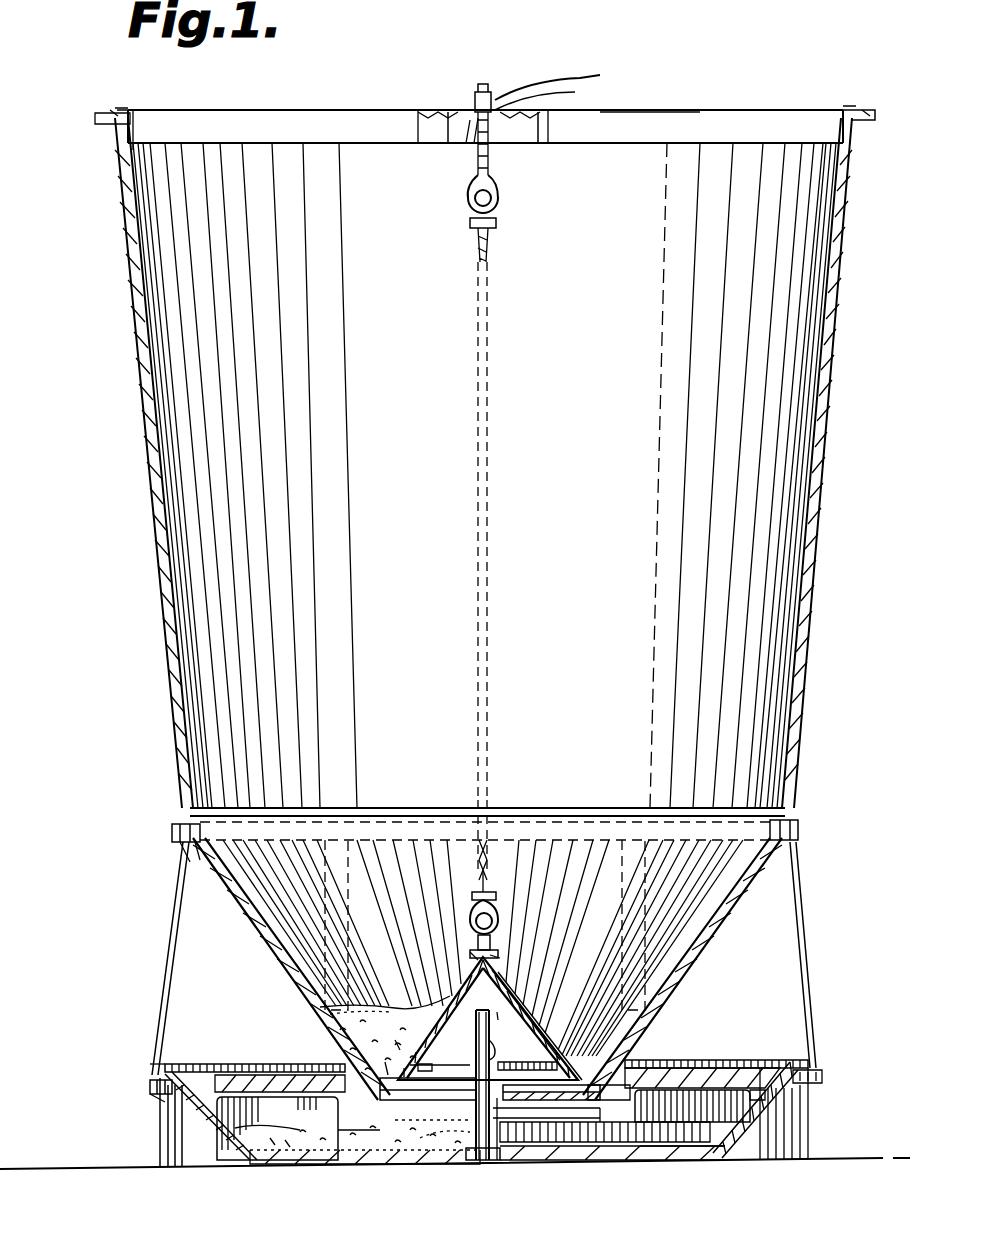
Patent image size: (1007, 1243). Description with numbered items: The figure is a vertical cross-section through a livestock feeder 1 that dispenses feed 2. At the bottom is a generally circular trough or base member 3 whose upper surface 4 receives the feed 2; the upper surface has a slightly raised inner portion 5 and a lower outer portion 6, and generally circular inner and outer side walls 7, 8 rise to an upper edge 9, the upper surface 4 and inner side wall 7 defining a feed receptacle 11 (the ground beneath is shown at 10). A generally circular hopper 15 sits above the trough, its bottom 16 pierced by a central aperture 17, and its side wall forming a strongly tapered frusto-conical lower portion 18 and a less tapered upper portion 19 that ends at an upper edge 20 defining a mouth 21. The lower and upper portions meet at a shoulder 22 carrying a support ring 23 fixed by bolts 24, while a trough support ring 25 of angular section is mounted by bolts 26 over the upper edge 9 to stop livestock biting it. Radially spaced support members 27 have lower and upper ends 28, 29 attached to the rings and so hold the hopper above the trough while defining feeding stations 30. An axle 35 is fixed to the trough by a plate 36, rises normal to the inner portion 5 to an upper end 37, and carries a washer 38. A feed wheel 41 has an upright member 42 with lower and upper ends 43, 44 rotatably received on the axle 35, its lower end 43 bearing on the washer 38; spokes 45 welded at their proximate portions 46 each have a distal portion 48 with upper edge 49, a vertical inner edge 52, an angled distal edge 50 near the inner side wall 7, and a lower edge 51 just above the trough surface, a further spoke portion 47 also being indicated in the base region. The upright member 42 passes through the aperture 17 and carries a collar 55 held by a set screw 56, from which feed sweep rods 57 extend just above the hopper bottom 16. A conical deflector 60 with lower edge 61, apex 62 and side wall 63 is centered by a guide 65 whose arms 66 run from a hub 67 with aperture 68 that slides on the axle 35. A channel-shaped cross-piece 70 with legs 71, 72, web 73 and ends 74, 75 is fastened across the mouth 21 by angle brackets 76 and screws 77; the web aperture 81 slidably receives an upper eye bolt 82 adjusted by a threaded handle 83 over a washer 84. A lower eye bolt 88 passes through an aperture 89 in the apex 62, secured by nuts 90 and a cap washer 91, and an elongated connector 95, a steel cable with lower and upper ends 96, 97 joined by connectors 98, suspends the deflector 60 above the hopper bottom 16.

The feeder 1 is at (712, 60).
The feed 2 is at (385, 1020).
The trough or base member 3 is at (160, 1165).
The upper surface 4 is at (312, 1140).
The inner portion 5 is at (365, 1145).
The outer portion 6 is at (285, 1138).
The inner side wall 7 is at (250, 1135).
The outer side wall 8 is at (165, 1135).
The upper edge 9 is at (172, 1064).
The floor 10 is at (838, 1156).
The feed receptacle 11 is at (234, 1088).
The hopper 15 is at (98, 120).
The bottom 16 is at (375, 1112).
The aperture 17 is at (605, 1130).
The lower portion 18 is at (725, 930).
The upper portion 19 is at (820, 436).
The upper edge 20 is at (852, 110).
The mouth 21 is at (134, 130).
The shoulder 22 is at (172, 822).
The support ring 23 is at (192, 860).
The bolts 24 is at (170, 832).
The trough support ring 25 is at (150, 1096).
The bolts 26 is at (148, 1082).
The support members 27 is at (160, 958).
The lower ends 28 is at (150, 1066).
The upper ends 29 is at (178, 846).
The feeding stations 30 is at (648, 1058).
The axle 35 is at (488, 1018).
The plate 36 is at (570, 1163).
The upper end 37 is at (467, 1084).
The washer 38 is at (472, 1162).
The feed wheel 41 is at (712, 1160).
The upright member 42 is at (432, 1118).
The lower end 43 is at (445, 1132).
The upper end 44 is at (440, 1078).
The spokes 45 is at (752, 1090).
The proximate portion 46 is at (522, 1163).
The bottom member 47 is at (668, 1162).
The distal portion 48 is at (592, 1100).
The distal portion upper edge 49 is at (692, 1091).
The angled distal edge 50 is at (740, 1125).
The lower edge 51 is at (498, 1163).
The distal portion inner edge 52 is at (630, 1095).
The collar 55 is at (527, 1074).
The screw 56 is at (574, 1125).
The feed sweep rods 57 is at (379, 1057).
The deflector 60 is at (455, 992).
The lower edge 61 is at (592, 1082).
The apex 62 is at (470, 960).
The side wall 63 is at (528, 1004).
The guide 65 is at (409, 1034).
The arms 66 is at (540, 1040).
The hub 67 is at (496, 1050).
The aperture 68 is at (512, 1010).
The cross-piece 70 is at (288, 110).
The first leg 71 is at (655, 122).
The second leg 72 is at (522, 140).
The web 73 is at (445, 108).
The first end 74 is at (135, 108).
The second end 75 is at (806, 108).
The angle brackets 76 is at (108, 108).
The screws 77 is at (120, 108).
The aperture 81 is at (462, 140).
The upper eye bolt 82 is at (468, 198).
The handle 83 is at (578, 82).
The washer 84 is at (568, 95).
The lower eye bolt 88 is at (497, 914).
The aperture 89 is at (498, 948).
The nuts 90 is at (470, 925).
The cap washer 91 is at (505, 950).
The elongated connector 95 is at (490, 800).
The lower end 96 is at (472, 882).
The upper end 97 is at (496, 196).
The connectors 98 is at (496, 222).